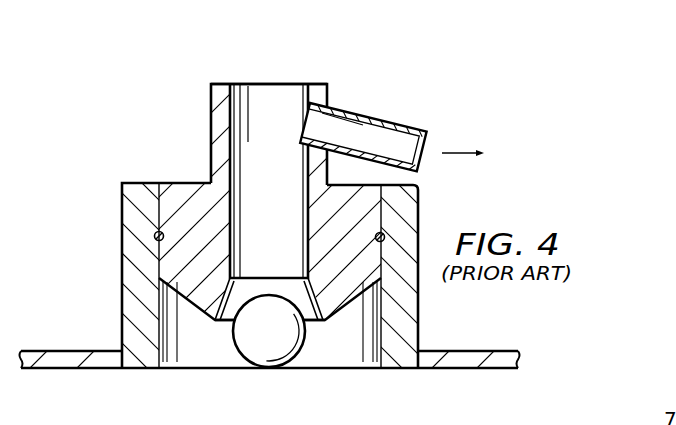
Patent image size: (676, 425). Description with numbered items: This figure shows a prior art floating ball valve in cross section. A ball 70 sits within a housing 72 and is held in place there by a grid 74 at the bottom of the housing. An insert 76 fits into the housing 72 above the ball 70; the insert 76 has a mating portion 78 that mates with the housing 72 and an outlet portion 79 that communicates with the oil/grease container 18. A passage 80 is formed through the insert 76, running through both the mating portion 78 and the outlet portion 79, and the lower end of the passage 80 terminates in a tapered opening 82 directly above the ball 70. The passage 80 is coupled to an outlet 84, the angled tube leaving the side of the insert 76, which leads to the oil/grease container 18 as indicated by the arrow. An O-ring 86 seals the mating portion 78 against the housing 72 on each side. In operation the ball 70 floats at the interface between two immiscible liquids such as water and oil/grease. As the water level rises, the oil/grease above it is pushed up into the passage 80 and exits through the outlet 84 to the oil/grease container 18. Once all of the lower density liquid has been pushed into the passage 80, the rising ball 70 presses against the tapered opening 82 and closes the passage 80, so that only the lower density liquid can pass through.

The oil/grease container 18 is at (535, 153).
The ball 70 is at (232, 338).
The housing 72 is at (122, 214).
The grid 74 is at (217, 370).
The insert 76 is at (300, 70).
The mating portion 78 is at (188, 183).
The outlet portion 79 is at (210, 98).
The passage 80 is at (270, 102).
The tapered opening 82 is at (318, 335).
The outlet 84 is at (393, 112).
The O-ring 86 is at (155, 237).